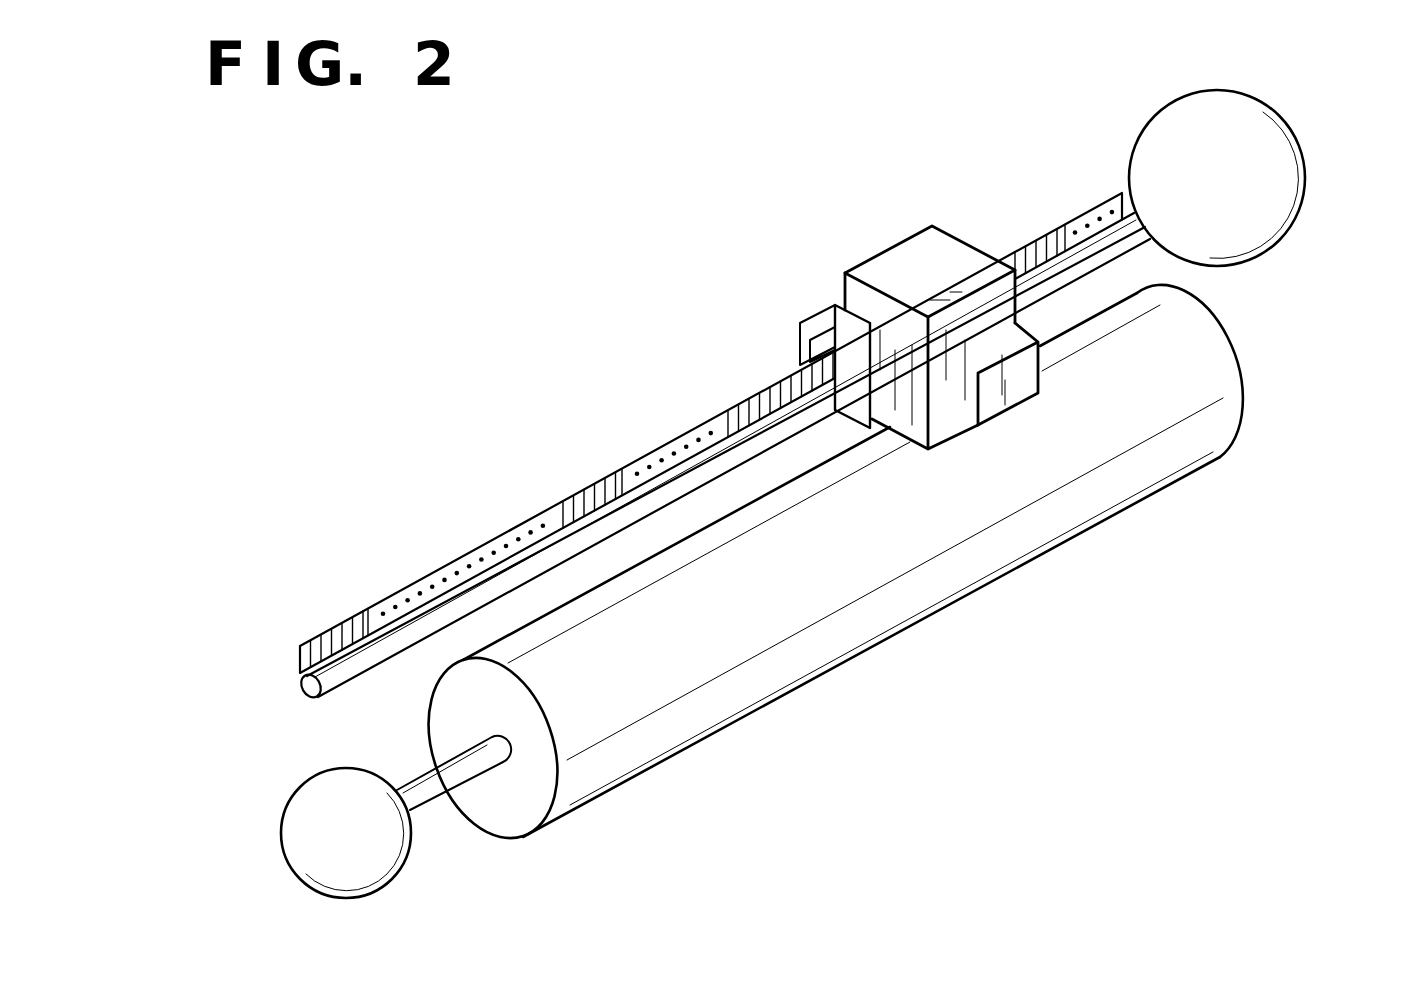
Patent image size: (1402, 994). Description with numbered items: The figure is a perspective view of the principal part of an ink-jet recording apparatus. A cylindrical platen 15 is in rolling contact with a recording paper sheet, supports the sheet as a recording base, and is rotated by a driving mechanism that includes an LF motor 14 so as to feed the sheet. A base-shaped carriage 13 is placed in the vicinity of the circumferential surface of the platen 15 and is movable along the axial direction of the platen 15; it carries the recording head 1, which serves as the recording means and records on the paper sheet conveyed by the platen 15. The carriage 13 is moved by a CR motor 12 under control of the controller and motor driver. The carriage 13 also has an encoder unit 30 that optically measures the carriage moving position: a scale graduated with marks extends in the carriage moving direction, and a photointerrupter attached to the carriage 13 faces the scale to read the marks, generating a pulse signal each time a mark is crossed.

The recording head 1 is at (931, 249).
The CR motor 12 is at (1300, 148).
The carriage 13 is at (847, 340).
The LF motor 14 is at (283, 841).
The platen 15 is at (888, 641).
The encoder unit 30 is at (798, 342).